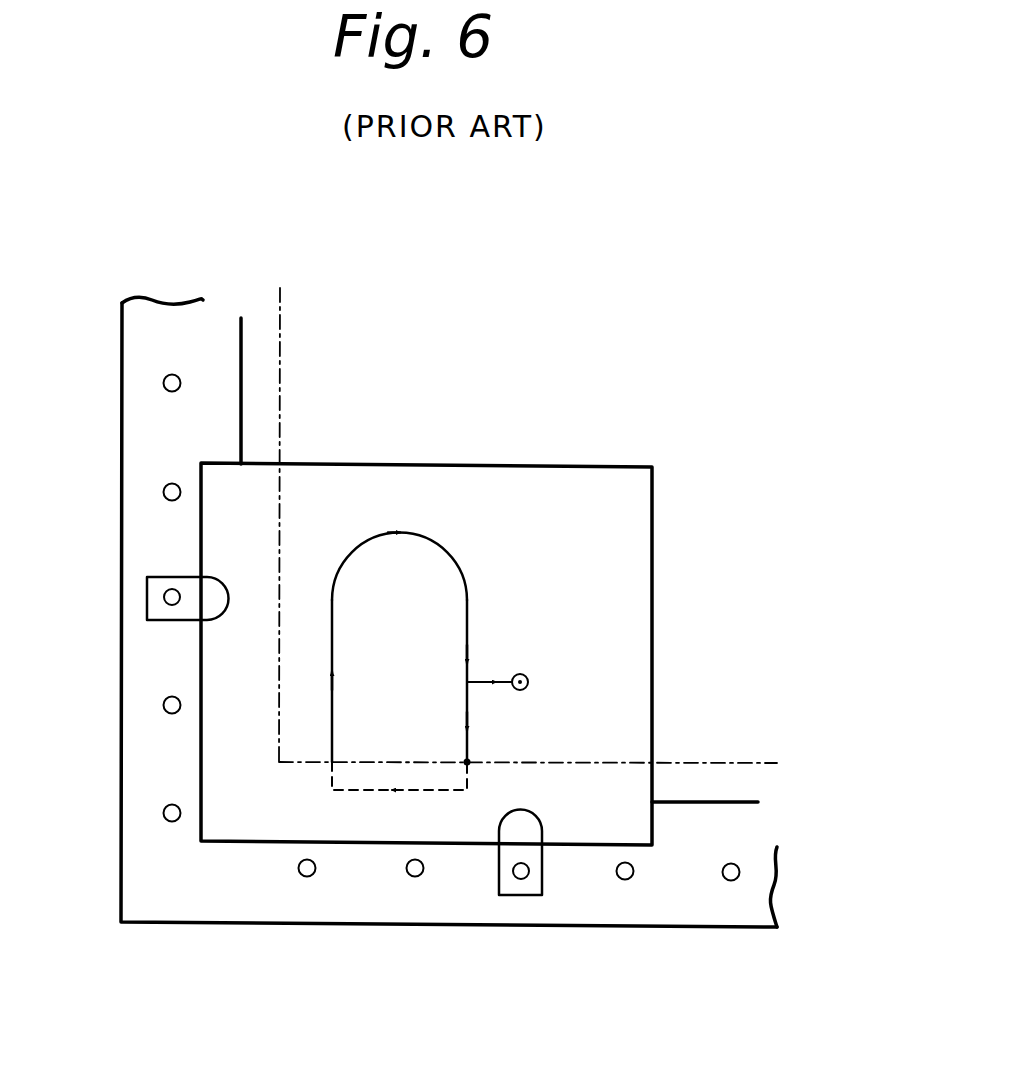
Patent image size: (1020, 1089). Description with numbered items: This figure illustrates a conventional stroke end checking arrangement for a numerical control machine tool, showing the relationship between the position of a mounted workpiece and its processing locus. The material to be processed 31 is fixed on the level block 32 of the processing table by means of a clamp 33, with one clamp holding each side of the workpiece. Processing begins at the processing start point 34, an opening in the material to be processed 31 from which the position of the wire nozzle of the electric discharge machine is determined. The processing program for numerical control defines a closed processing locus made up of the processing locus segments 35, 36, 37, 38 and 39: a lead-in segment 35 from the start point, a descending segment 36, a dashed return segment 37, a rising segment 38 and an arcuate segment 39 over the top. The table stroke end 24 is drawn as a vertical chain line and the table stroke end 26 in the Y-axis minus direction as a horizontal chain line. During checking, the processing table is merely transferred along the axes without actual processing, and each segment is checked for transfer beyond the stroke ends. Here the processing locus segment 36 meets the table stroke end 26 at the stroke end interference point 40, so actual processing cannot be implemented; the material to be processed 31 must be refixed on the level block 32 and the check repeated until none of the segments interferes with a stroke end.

The table stroke end 24 is at (283, 303).
The table stroke end in the Y-axis minus direction 26 is at (752, 763).
The material to be processed 31 is at (562, 466).
The level block 32 is at (216, 905).
The clamp 33 is at (157, 590).
The processing start point 34 is at (521, 674).
The processing locus segment 35 is at (483, 682).
The processing locus segment 36 is at (467, 712).
The processing locus segment 37 is at (410, 792).
The processing locus segment 38 is at (332, 705).
The processing locus segment 39 is at (388, 532).
The stroke end interference point 40 is at (467, 763).